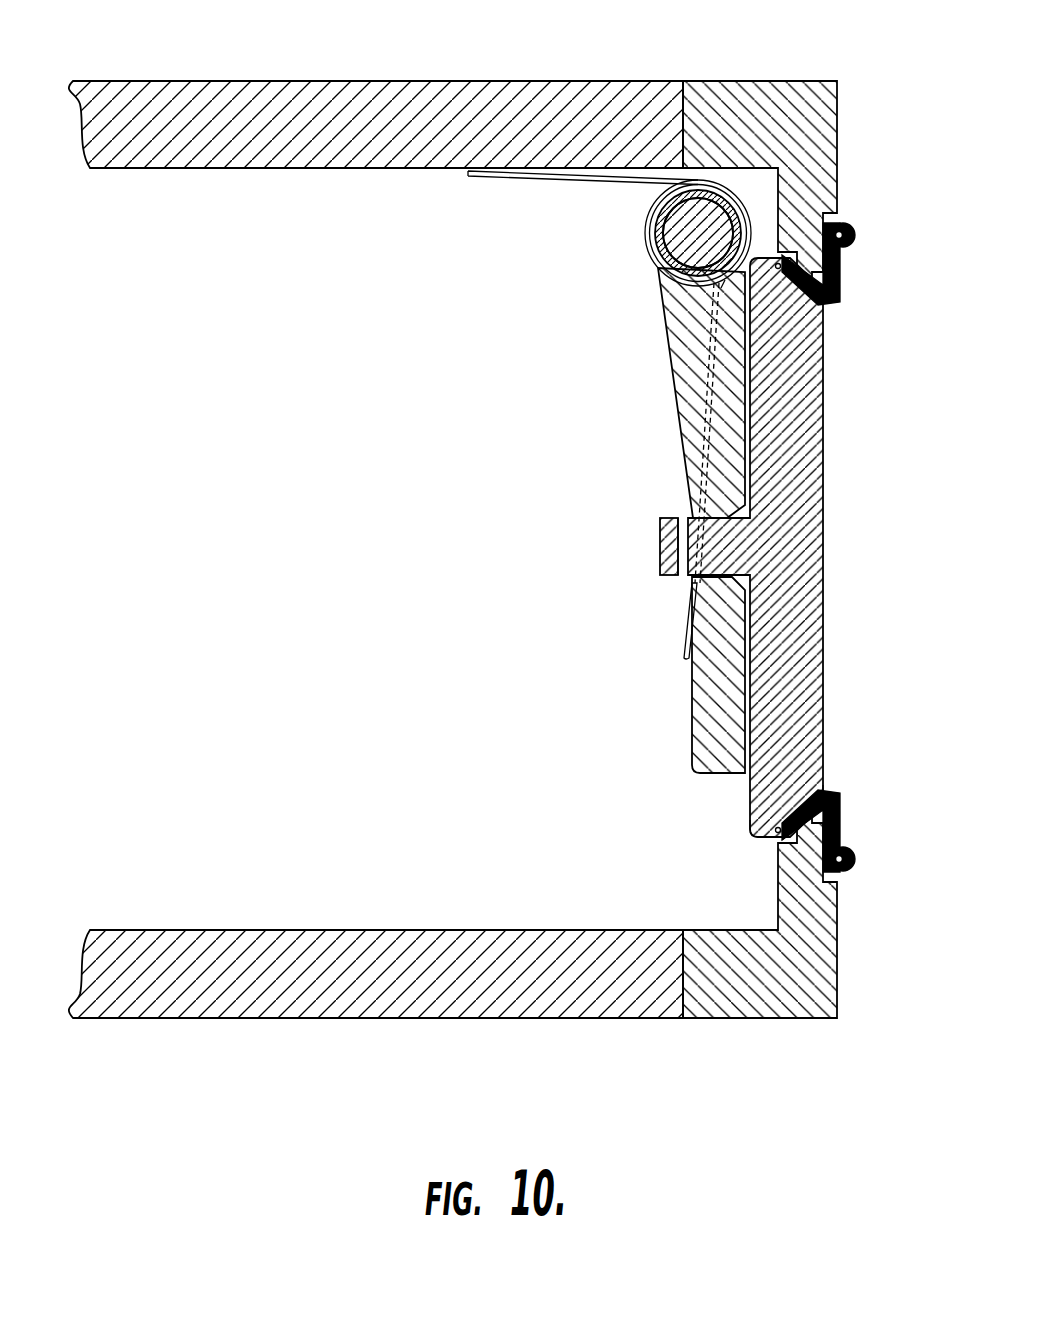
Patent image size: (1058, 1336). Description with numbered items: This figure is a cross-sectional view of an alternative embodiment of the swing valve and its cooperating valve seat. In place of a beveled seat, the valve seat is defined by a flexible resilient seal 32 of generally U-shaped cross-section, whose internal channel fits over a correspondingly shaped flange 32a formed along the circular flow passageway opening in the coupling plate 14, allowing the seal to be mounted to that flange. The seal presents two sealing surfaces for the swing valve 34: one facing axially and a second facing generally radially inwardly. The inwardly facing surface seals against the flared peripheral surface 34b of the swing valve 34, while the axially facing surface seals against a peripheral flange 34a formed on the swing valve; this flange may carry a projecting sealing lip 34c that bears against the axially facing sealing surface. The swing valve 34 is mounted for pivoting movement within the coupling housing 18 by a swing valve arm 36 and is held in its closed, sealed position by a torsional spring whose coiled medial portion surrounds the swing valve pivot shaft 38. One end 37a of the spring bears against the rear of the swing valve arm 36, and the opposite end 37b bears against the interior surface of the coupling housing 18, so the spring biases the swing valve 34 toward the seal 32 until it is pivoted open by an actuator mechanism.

The coupling plate 14 is at (818, 975).
The coupling housing 18 is at (440, 100).
The flexible resilient seal 32 is at (851, 232).
The flange 32a is at (810, 272).
The swing valve 34 is at (805, 418).
The peripheral flange 34a is at (762, 810).
The flared peripheral surface 34b is at (800, 800).
The projecting sealing lip 34c is at (772, 838).
The swing valve arm 36 is at (700, 378).
The torsional spring end 37a is at (690, 603).
The torsional spring opposite end 37b is at (480, 178).
The swing valve pivot shaft 38 is at (685, 230).